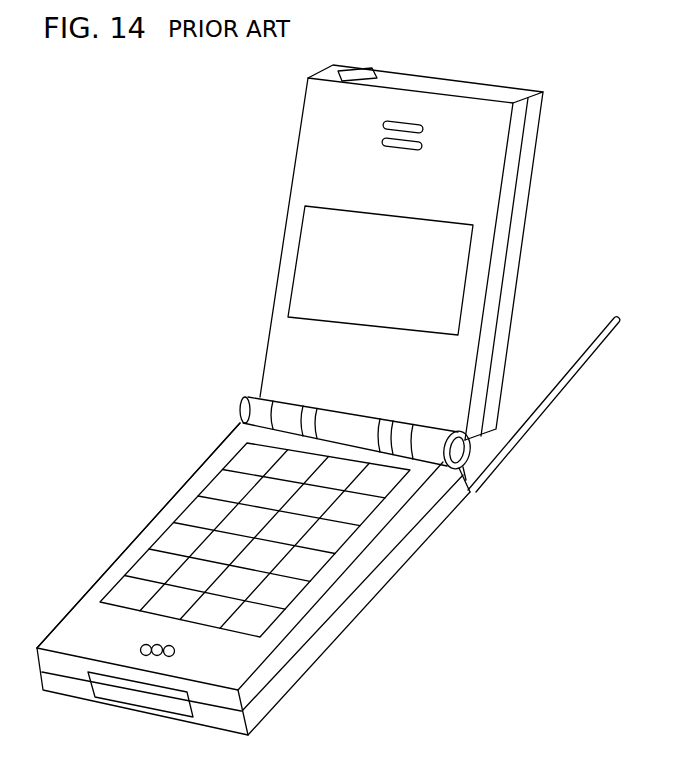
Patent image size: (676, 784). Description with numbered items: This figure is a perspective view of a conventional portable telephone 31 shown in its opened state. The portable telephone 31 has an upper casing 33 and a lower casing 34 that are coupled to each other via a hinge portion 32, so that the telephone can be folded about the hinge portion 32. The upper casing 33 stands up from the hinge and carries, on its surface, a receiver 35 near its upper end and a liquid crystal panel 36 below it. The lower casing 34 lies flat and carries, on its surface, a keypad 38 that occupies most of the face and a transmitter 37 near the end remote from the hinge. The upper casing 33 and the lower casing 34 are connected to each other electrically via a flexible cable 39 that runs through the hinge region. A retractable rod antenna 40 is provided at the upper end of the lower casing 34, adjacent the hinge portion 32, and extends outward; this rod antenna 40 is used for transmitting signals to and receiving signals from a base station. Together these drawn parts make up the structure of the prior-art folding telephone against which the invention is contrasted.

The portable telephone 31 is at (153, 108).
The hinge portion 32 is at (470, 455).
The upper casing 33 is at (308, 163).
The lower casing 34 is at (165, 508).
The receiver 35 is at (423, 137).
The liquid crystal panel 36 is at (457, 250).
The transmitter 37 is at (177, 651).
The keypad 38 is at (343, 542).
The flexible cable 39 is at (340, 427).
The retractable rod antenna 40 is at (563, 382).